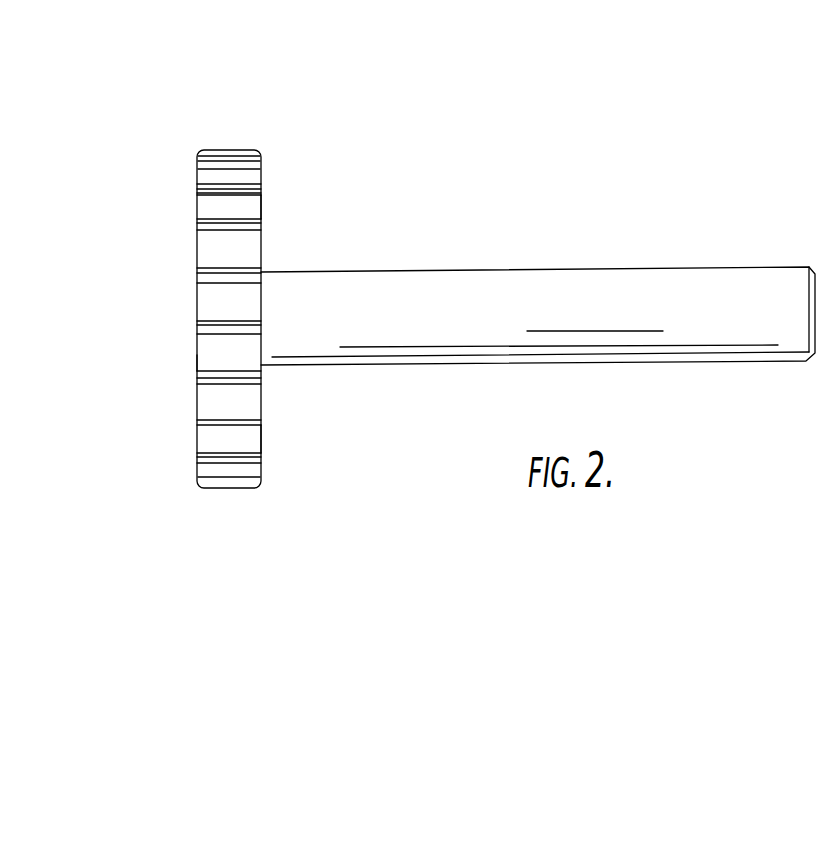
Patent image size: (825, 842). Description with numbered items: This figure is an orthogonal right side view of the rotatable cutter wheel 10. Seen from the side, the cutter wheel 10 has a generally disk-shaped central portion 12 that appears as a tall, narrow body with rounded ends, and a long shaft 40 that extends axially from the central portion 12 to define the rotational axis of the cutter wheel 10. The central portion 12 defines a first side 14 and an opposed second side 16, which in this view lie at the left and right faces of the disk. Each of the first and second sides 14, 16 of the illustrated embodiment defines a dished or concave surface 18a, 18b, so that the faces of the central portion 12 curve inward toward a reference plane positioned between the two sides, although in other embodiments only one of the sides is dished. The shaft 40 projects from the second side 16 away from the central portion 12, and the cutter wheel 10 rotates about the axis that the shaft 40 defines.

The cutter wheel 10 is at (457, 114).
The central portion 12 is at (198, 398).
The first side 14 is at (198, 195).
The second side 16 is at (263, 207).
The dished surface 18a is at (200, 355).
The dished surface 18b is at (263, 442).
The shaft 40 is at (582, 268).